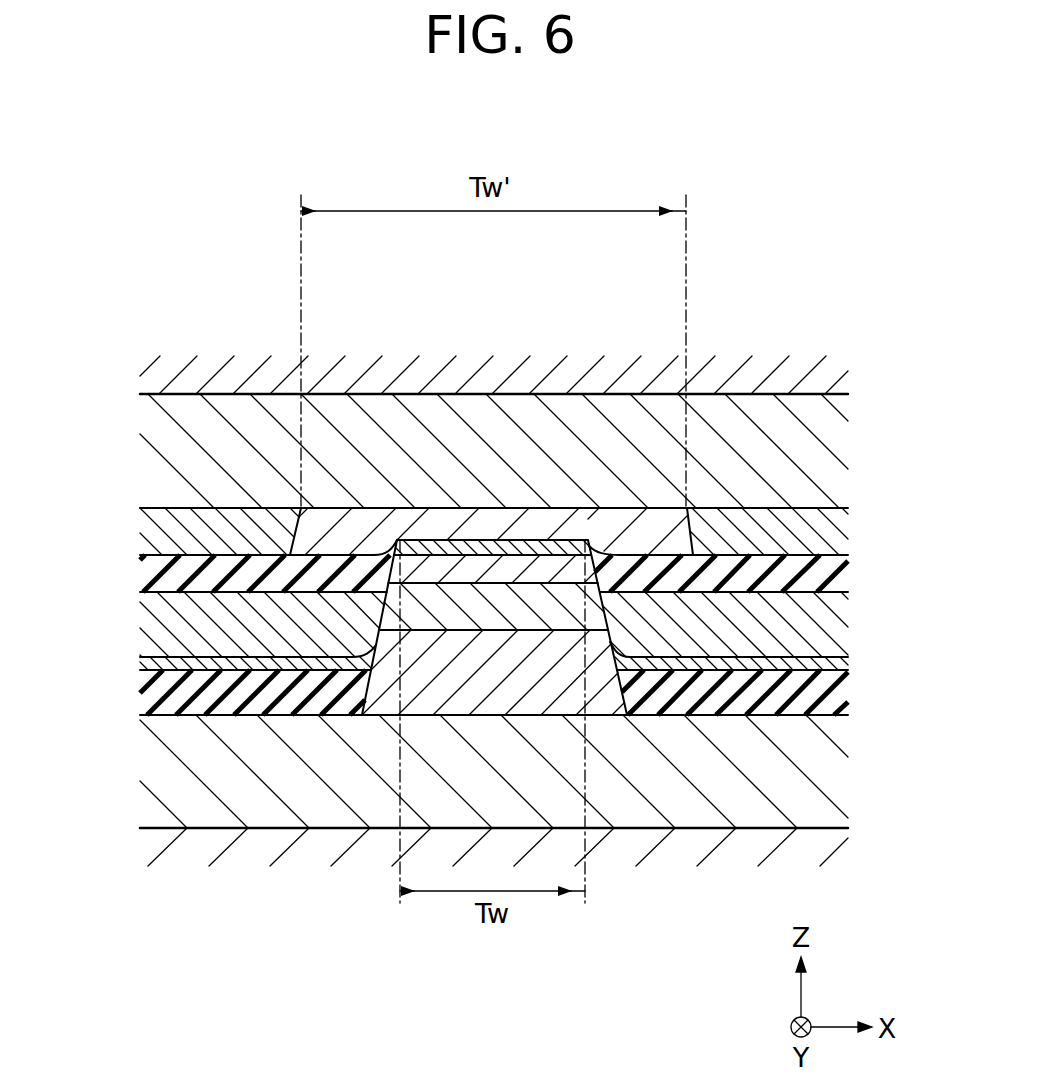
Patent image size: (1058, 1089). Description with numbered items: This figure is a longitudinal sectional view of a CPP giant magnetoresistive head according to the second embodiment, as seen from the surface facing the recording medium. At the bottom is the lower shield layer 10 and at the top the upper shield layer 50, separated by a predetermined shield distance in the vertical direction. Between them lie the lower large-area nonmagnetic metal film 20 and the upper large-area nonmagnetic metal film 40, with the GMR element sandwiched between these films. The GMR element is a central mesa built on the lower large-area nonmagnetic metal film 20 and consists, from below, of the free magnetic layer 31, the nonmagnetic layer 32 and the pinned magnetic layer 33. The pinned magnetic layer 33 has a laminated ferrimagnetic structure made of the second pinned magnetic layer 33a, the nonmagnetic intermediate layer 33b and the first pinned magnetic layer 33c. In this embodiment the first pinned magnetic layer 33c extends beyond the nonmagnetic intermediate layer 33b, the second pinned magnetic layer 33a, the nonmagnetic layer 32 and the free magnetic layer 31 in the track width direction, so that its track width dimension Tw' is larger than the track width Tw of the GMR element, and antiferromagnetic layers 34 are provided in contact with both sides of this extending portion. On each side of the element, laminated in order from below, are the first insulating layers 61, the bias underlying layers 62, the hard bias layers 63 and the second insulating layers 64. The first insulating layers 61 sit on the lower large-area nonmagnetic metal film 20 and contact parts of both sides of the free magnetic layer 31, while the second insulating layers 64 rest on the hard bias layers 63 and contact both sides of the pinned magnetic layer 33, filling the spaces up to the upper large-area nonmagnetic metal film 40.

The lower shield layer 10 is at (820, 846).
The lower large-area nonmagnetic metal film 20 is at (820, 770).
The free magnetic layer 31 is at (528, 668).
The nonmagnetic layer 32 is at (508, 608).
The pinned magnetic layer 33 is at (313, 307).
The second pinned magnetic layer 33a is at (498, 570).
The nonmagnetic intermediate layer 33b is at (468, 543).
The first pinned magnetic layer 33c is at (443, 515).
The antiferromagnetic layer 34 is at (147, 533).
The upper large-area nonmagnetic metal film 40 is at (820, 448).
The upper shield layer 50 is at (820, 384).
The first insulating layer 61 is at (150, 700).
The bias underlying layer 62 is at (150, 663).
The hard bias layer 63 is at (150, 625).
The second insulating layer 64 is at (147, 577).